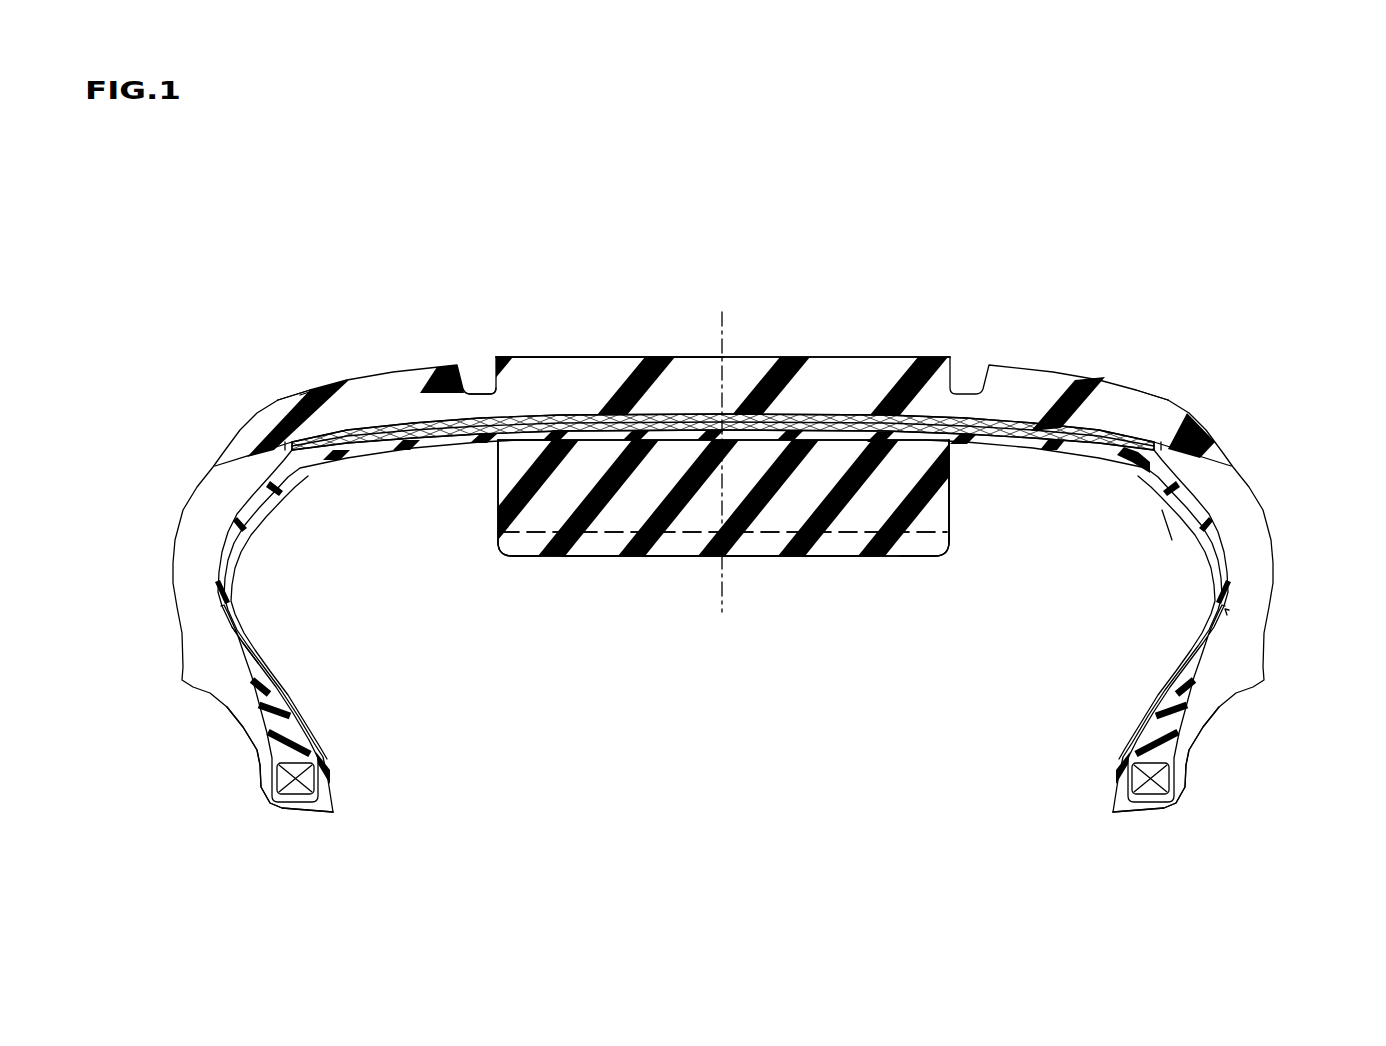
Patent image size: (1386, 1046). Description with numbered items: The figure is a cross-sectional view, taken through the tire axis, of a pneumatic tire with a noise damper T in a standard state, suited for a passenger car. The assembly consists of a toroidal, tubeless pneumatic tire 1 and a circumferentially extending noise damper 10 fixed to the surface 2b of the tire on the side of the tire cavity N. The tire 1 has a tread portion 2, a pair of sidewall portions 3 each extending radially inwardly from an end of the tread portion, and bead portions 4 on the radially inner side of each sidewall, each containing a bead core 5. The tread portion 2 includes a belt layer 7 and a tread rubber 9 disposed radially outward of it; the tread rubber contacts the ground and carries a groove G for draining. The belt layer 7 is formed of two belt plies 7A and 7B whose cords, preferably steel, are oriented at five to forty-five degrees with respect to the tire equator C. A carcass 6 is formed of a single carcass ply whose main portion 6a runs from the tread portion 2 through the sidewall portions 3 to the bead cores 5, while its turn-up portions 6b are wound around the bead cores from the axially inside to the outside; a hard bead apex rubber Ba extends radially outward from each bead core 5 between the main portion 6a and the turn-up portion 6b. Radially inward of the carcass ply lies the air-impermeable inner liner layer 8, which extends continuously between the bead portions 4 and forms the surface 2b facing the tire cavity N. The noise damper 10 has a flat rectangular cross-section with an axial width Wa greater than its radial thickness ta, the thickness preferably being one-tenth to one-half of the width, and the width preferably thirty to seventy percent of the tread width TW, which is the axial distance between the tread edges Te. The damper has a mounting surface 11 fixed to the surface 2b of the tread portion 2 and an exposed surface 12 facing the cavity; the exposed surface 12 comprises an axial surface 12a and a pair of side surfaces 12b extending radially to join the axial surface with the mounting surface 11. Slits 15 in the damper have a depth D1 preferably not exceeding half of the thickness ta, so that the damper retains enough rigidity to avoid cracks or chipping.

The pneumatic tire 1 is at (1033, 312).
The tread portion 2 is at (855, 357).
The surface of tire on the side of tire cavity 2b is at (260, 657).
The sidewall portion 3 is at (168, 587).
The bead portion 4 is at (337, 778).
The bead core 5 is at (283, 780).
The carcass 6 is at (1100, 582).
The main portion 6a is at (1222, 582).
The turn-up portion 6b is at (1222, 637).
The belt layer 7 is at (1132, 528).
The belt ply 7A is at (1057, 428).
The belt ply 7B is at (1107, 436).
The inner liner layer 8 is at (228, 577).
The tread rubber 9 is at (355, 380).
The noise damper 10 is at (967, 458).
The mounting surface 11 is at (516, 432).
The exposed surface 12 is at (515, 682).
The axial surface 12a is at (587, 558).
The side surface 12b is at (497, 498).
The slit 15 is at (666, 558).
The bead apex rubber Ba is at (283, 732).
The tire equator C is at (722, 448).
The depth D1 is at (848, 505).
The groove G is at (478, 366).
The tire cavity N is at (741, 793).
The pneumatic tire with a noise damper T is at (1118, 231).
The tread edge Te is at (277, 398).
The tread width TW is at (1170, 400).
The axial width Wa is at (950, 357).
The thickness ta is at (1002, 448).